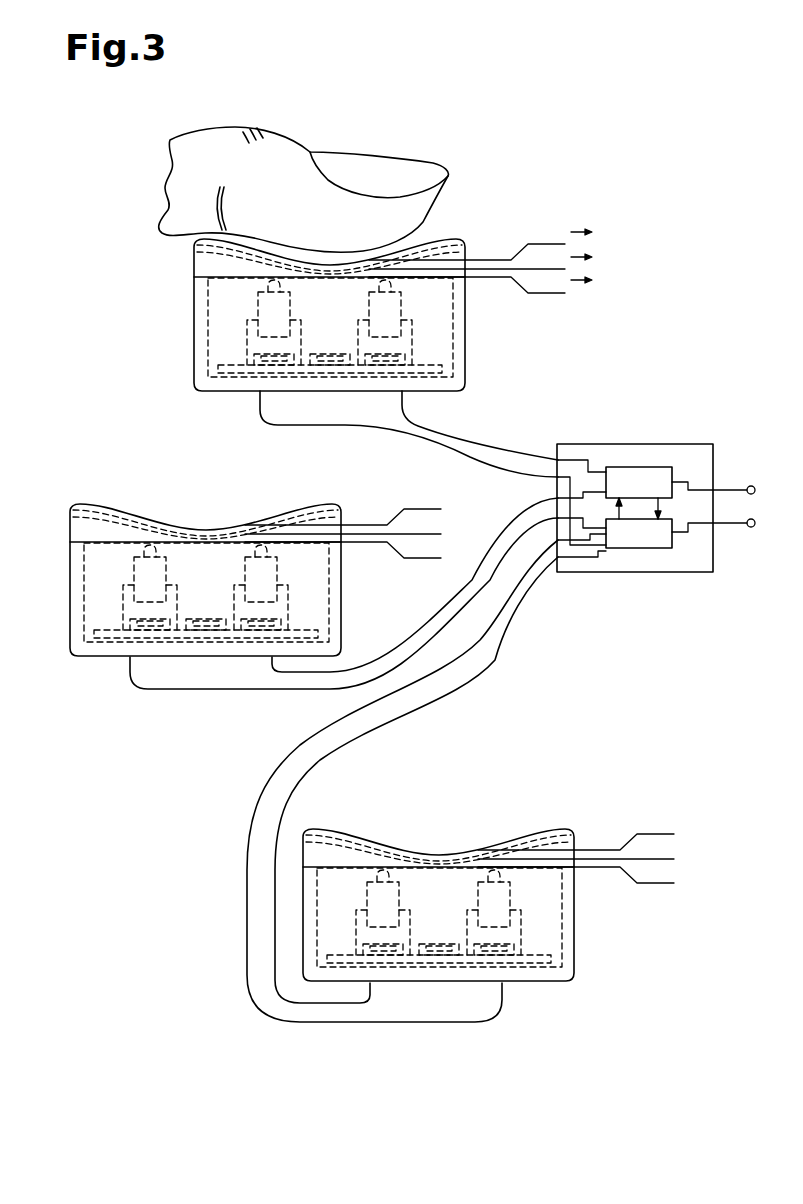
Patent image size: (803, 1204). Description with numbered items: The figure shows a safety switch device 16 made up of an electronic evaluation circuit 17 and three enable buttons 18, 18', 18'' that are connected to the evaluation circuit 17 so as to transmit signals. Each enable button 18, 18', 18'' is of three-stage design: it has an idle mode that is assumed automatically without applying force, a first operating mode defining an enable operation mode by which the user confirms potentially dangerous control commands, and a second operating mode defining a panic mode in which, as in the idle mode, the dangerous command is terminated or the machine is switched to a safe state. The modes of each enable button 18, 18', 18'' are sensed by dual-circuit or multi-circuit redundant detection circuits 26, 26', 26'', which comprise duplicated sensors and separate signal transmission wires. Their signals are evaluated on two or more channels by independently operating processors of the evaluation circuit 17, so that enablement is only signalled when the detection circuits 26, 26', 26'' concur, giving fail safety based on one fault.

The safety switch device 16 is at (636, 130).
The electronic evaluation circuit 17 is at (666, 446).
The enable button 18 is at (404, 250).
The enable button 18' is at (245, 589).
The enable button 18'' is at (489, 874).
The detection circuit 26 is at (397, 327).
The detection circuit 26' is at (206, 674).
The detection circuit 26'' is at (439, 976).